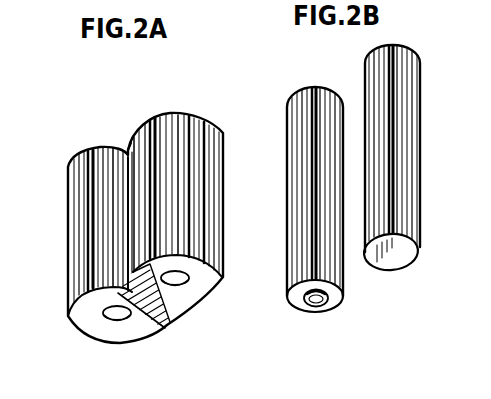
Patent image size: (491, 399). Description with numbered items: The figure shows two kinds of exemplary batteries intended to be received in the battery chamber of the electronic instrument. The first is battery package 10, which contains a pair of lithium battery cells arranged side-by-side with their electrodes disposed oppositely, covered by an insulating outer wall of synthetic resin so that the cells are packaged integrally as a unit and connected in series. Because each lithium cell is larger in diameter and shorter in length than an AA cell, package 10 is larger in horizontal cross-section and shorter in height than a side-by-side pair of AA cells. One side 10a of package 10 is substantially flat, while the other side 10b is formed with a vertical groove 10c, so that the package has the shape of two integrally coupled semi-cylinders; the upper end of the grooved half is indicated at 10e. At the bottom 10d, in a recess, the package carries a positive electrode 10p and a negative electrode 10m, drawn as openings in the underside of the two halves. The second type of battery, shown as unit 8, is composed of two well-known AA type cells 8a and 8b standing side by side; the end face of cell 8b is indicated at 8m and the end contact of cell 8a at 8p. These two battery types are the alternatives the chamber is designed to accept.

In FIG. 2A, the battery package 10 is at (155, 224).
In FIG. 2A, the flat side of battery package 10a is at (163, 328).
In FIG. 2A, the grooved side of battery package 10b is at (98, 218).
In FIG. 2A, the vertical groove 10c is at (127, 153).
In FIG. 2A, the bottom of battery package 10d is at (182, 307).
In FIG. 2A, the second cylindrical lobe 10e is at (176, 111).
In FIG. 2A, the negative electrode 10m is at (190, 282).
In FIG. 2A, the positive electrode 10p is at (113, 315).
In FIG. 2B, the pin assembly 8 is at (353, 202).
In FIG. 2B, the AA type cell 8a is at (288, 158).
In FIG. 2B, the AA type cell 8b is at (420, 165).
In FIG. 2B, the end face of second pin 8m is at (407, 253).
In FIG. 2B, the hole in end of first pin 8p is at (318, 302).